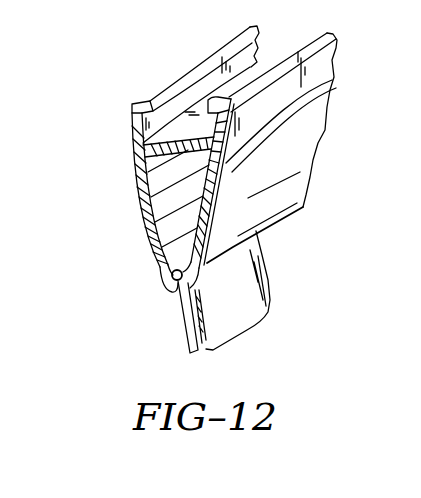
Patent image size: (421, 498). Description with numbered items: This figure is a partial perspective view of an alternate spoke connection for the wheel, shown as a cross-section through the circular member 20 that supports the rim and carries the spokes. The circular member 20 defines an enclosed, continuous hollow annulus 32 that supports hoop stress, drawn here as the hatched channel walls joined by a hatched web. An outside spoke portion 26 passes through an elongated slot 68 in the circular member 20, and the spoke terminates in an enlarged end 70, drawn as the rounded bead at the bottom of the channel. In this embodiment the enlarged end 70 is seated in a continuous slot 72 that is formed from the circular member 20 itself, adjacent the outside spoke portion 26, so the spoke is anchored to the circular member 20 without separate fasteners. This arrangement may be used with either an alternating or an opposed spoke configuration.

The circular member 20 is at (300, 147).
The outside spoke portion 26 is at (243, 268).
The hollow annulus 32 is at (162, 180).
The elongated slot 68 is at (163, 272).
The enlarged end 70 is at (173, 283).
The continuous slot 72 is at (196, 292).